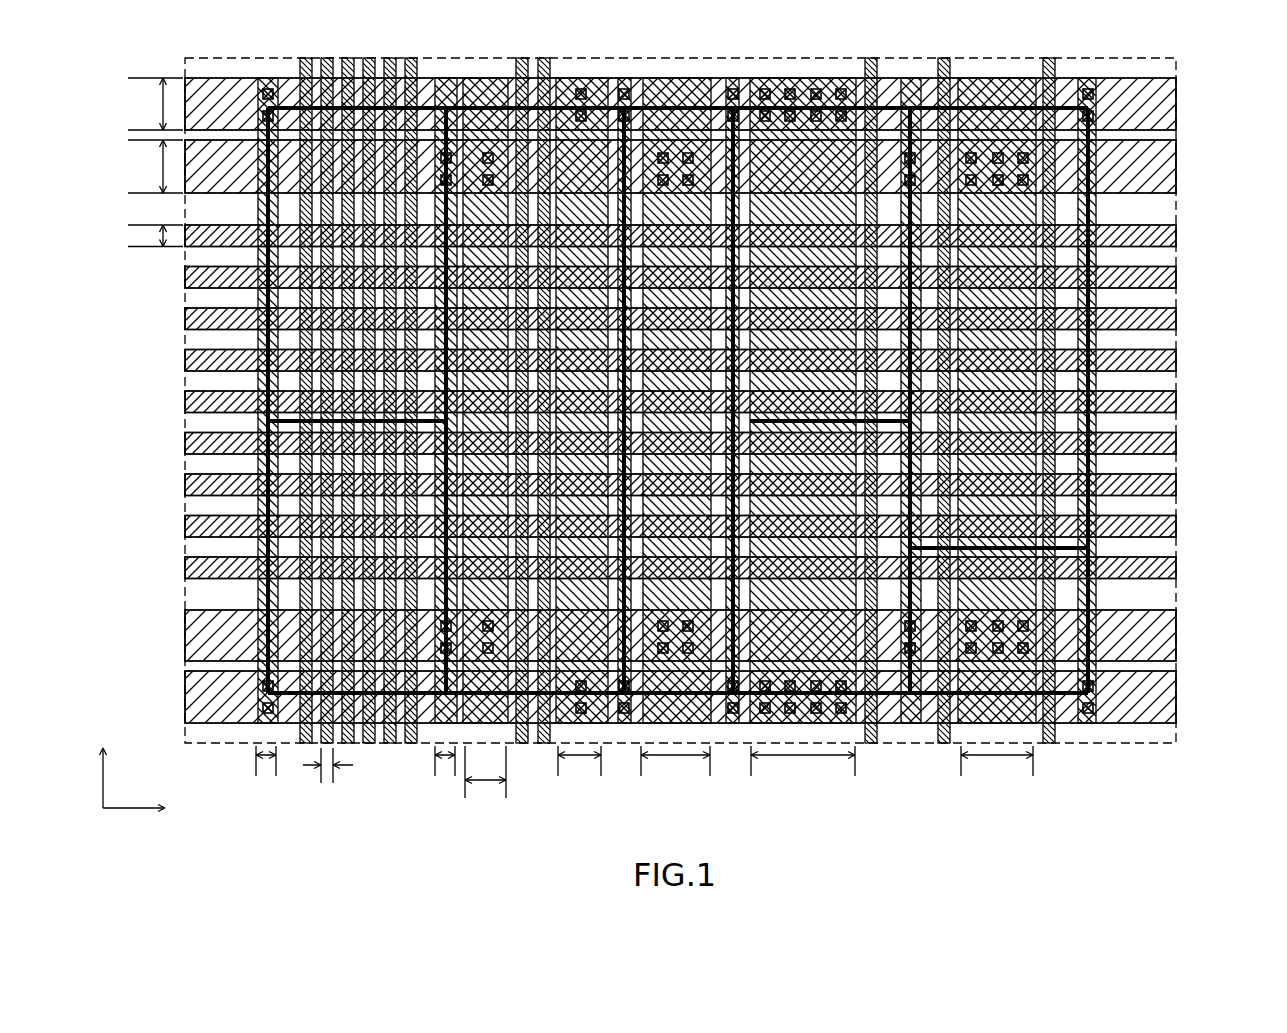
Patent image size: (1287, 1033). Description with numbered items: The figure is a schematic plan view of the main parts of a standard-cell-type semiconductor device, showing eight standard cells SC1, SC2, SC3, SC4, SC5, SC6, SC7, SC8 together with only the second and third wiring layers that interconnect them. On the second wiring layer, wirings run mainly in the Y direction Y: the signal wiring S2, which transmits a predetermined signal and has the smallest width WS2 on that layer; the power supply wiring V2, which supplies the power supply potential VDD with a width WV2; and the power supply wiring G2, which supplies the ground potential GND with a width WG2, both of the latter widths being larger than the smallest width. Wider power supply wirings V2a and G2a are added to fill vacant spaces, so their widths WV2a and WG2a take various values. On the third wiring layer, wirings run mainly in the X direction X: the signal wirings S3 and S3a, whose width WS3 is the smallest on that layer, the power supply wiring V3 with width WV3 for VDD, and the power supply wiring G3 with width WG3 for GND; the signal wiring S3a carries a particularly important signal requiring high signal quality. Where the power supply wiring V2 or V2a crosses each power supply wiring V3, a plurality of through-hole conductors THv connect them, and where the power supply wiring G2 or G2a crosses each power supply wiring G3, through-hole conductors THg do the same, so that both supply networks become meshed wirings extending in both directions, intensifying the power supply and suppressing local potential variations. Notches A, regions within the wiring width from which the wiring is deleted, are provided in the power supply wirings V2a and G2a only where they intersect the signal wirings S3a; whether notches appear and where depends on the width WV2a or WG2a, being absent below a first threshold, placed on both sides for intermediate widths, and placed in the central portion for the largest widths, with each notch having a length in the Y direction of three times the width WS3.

The power supply wiring G2 is at (262, 68).
The wide power supply wiring G2a is at (575, 68).
The signal wiring S2 is at (409, 47).
The power supply wiring V2 is at (438, 68).
The wide power supply wiring V2a is at (470, 68).
The power supply wiring G3 is at (1170, 92).
The power supply wiring V3 is at (1170, 155).
The signal wiring S3 is at (1168, 228).
The signal wiring S3a is at (1168, 312).
The standard cell SC1 is at (282, 292).
The standard cell SC2 is at (282, 590).
The standard cell SC3 is at (505, 70).
The standard cell SC4 is at (855, 130).
The standard cell SC5 is at (882, 660).
The standard cell SC6 is at (1057, 205).
The standard cell SC7 is at (1057, 450).
The standard cell SC8 is at (1057, 590).
The through-hole conductor THg is at (255, 705).
The through-hole conductor THv is at (436, 645).
The notch A is at (692, 270).
The wiring width WG3 is at (149, 104).
The wiring width WV3 is at (149, 166).
The wiring width WS3 is at (478, 400).
The wiring width WG2 is at (267, 776).
The wiring width WS2 is at (328, 777).
The wiring width WV2 is at (445, 776).
The wiring width WV2a is at (745, 794).
The wiring width WG2a is at (705, 783).
The X direction X is at (141, 807).
The Y direction Y is at (101, 766).